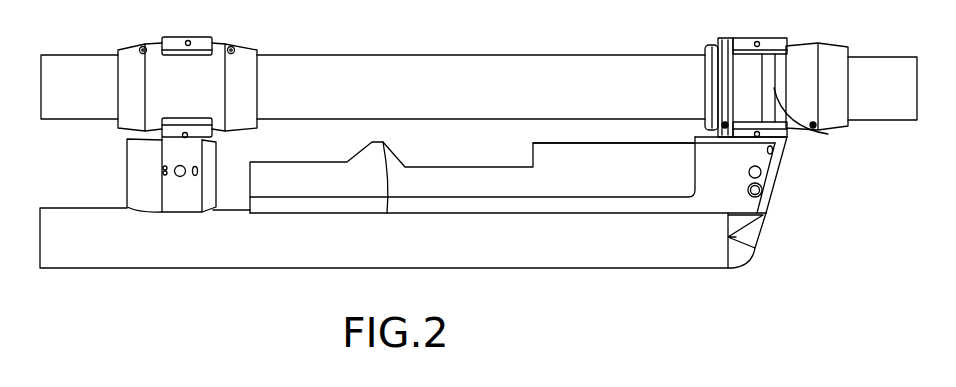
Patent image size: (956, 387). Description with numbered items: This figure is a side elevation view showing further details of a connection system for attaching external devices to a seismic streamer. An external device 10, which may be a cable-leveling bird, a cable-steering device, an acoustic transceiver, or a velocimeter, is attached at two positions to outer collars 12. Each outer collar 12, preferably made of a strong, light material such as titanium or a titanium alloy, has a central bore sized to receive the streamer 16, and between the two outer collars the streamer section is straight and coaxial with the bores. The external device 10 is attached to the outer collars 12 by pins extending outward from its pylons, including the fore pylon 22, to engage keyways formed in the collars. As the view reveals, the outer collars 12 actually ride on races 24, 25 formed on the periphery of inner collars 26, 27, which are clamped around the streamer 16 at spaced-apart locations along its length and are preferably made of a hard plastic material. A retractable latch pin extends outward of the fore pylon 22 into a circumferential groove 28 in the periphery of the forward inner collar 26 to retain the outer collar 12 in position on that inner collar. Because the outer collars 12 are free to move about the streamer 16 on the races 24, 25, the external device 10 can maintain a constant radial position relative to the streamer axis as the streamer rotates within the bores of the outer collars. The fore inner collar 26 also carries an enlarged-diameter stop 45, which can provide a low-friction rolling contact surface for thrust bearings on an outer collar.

The external device 10 is at (615, 262).
The outer collar 12 is at (200, 38).
The streamer 16 is at (379, 62).
The fore pylon 22 is at (777, 162).
The race 24 is at (742, 63).
The race 25 is at (175, 70).
The fore inner collar 26 is at (828, 53).
The aft inner collar 27 is at (250, 53).
The circumferential groove 28 is at (829, 134).
The enlarged-diameter stop 45 is at (720, 46).